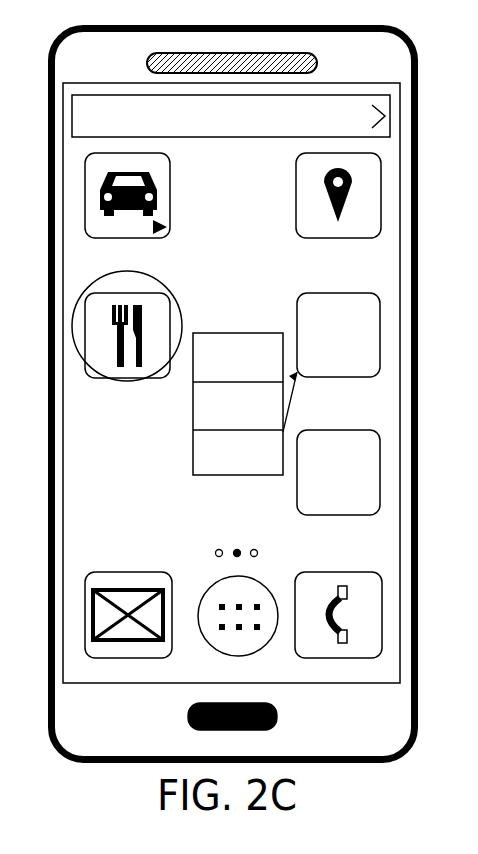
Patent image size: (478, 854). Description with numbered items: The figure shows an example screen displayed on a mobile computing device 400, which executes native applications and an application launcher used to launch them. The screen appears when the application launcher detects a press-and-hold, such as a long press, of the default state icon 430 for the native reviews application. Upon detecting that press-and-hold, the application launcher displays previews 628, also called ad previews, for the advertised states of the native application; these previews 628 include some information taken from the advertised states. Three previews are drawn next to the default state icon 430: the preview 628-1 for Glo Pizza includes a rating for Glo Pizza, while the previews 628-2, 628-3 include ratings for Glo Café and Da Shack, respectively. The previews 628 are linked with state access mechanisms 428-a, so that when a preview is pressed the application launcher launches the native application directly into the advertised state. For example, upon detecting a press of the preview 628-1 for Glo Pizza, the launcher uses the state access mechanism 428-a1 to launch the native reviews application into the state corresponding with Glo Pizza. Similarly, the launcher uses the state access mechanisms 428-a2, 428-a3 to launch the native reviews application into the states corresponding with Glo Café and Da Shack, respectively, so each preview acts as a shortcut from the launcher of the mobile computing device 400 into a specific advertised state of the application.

The mobile computing device 400 is at (417, 62).
The default state icon 430 is at (381, 291).
The previews 628 is at (189, 404).
The preview for Glo Pizza 628-1 is at (241, 329).
The preview for Glo Café 628-2 is at (182, 418).
The preview for Da Shack 628-3 is at (214, 480).
The state access mechanisms 428-a is at (189, 404).
The state access mechanism 428-a1 is at (236, 332).
The state access mechanism 428-a2 is at (200, 402).
The state access mechanism 428-a3 is at (213, 472).